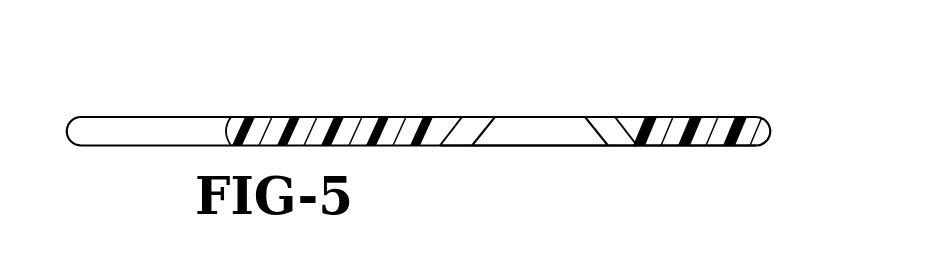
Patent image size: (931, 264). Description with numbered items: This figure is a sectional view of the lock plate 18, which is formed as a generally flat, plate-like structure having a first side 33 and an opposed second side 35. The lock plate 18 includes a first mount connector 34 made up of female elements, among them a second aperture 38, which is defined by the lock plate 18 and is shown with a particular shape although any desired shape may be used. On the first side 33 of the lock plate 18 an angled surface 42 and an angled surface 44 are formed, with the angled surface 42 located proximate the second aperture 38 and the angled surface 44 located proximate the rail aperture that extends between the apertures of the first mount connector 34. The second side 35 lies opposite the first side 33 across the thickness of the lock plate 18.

The lock plate 18 is at (268, 92).
The first side 33 is at (672, 146).
The first mount connector 34 is at (548, 105).
The second side 35 is at (686, 117).
The second aperture 38 is at (530, 132).
The angled surface 42 is at (447, 133).
The angled surface 44 is at (481, 133).